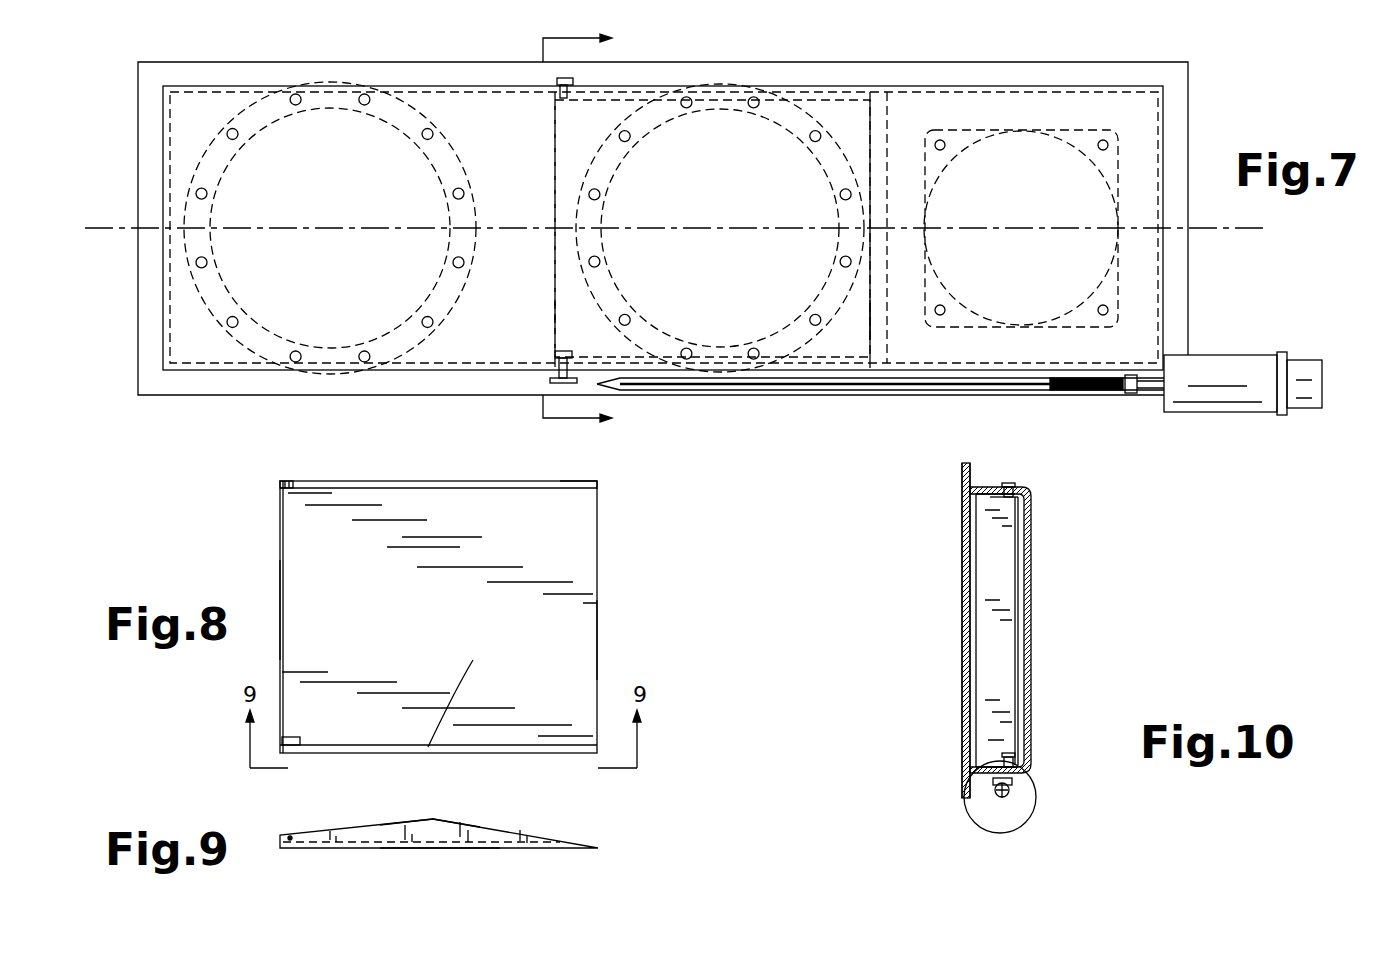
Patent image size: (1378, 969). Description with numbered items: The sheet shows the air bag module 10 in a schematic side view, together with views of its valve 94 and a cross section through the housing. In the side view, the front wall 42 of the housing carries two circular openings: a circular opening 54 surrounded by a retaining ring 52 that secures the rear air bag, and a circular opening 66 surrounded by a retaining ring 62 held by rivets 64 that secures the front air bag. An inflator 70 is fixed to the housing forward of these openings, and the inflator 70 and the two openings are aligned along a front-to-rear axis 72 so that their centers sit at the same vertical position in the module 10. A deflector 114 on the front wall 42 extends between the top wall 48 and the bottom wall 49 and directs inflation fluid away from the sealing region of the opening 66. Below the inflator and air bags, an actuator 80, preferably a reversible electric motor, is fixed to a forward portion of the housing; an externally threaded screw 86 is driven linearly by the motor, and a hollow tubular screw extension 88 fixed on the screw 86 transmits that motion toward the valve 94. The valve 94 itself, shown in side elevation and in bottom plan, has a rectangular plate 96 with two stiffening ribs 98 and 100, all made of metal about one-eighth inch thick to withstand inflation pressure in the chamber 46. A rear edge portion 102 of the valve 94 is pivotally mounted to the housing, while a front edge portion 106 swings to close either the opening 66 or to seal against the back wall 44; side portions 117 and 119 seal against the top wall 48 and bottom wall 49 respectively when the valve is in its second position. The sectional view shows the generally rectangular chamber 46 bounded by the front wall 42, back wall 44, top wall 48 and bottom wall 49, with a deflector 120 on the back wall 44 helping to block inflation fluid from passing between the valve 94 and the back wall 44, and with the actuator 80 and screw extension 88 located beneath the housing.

In FIG. 7, the air bag module 10 is at (1230, 259).
In FIG. 10, the air bag module 10 is at (1062, 668).
In FIG. 10, the front wall 42 is at (1030, 560).
In FIG. 10, the back wall 44 is at (962, 573).
In FIG. 10, the chamber 46 is at (993, 653).
In FIG. 10, the top wall 48 is at (960, 528).
In FIG. 10, the bottom wall 49 is at (998, 783).
In FIG. 7, the retaining ring 52 is at (262, 117).
In FIG. 7, the circular opening 54 is at (337, 172).
In FIG. 7, the retaining ring 62 is at (650, 338).
In FIG. 7, the rivets 64 is at (673, 92).
In FIG. 7, the circular opening 66 is at (757, 201).
In FIG. 7, the inflator 70 is at (1117, 162).
In FIG. 7, the front-to-rear axis 72 is at (1200, 228).
In FIG. 7, the actuator 80 is at (1303, 375).
In FIG. 10, the actuator 80 is at (1025, 807).
In FIG. 7, the screw 86 is at (1096, 392).
In FIG. 7, the screw extension 88 is at (848, 380).
In FIG. 10, the screw extension 88 is at (1002, 803).
In FIG. 7, the valve 94 is at (550, 142).
In FIG. 8, the valve 94 is at (248, 526).
In FIG. 9, the valve 94 is at (260, 836).
In FIG. 8, the rectangular plate 96 is at (563, 568).
In FIG. 9, the rectangular plate 96 is at (440, 847).
In FIG. 8, the stiffening rib 98 is at (567, 490).
In FIG. 10, the stiffening rib 98 is at (962, 527).
In FIG. 8, the stiffening rib 100 is at (474, 693).
In FIG. 9, the stiffening rib 100 is at (457, 823).
In FIG. 10, the stiffening rib 100 is at (998, 760).
In FIG. 7, the rear edge portion 102 is at (555, 312).
In FIG. 8, the rear edge portion 102 is at (280, 613).
In FIG. 7, the front edge portion 106 is at (870, 343).
In FIG. 8, the front edge portion 106 is at (598, 640).
In FIG. 7, the deflector 114 is at (882, 148).
In FIG. 8, the side portion 117 is at (407, 481).
In FIG. 8, the side portion 119 is at (460, 753).
In FIG. 10, the deflector 120 is at (970, 615).